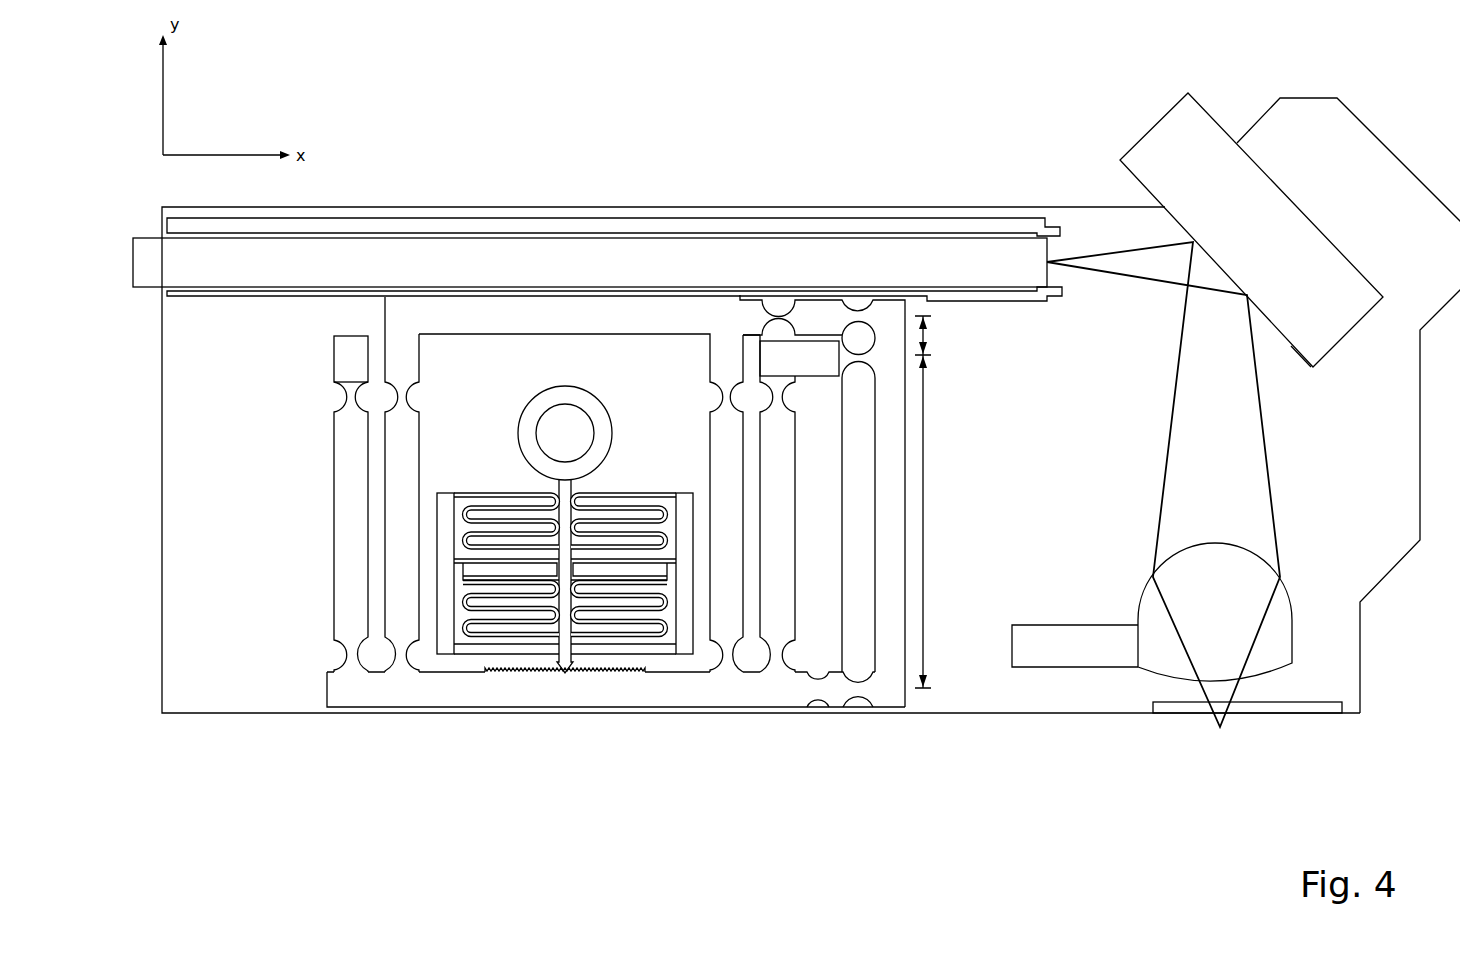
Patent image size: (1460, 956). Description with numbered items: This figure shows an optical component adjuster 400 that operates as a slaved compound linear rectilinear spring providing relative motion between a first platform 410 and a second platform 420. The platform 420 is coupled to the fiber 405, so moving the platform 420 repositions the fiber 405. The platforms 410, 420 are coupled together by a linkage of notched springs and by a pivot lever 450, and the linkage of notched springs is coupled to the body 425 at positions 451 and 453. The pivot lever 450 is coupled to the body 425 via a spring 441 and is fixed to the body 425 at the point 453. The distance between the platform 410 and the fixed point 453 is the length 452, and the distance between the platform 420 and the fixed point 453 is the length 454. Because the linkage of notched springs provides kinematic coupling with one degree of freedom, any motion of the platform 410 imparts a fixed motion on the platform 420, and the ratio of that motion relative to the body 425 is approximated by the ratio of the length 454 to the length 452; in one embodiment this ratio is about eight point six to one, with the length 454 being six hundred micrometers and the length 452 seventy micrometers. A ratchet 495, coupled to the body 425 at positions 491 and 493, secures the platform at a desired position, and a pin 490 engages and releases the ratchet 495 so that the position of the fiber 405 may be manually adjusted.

The adjuster 400 is at (884, 168).
The fiber 405 is at (613, 276).
The platform 410 is at (707, 697).
The platform 420 is at (493, 334).
The body 425 is at (232, 695).
The spring 441 is at (857, 380).
The pivot lever 450 is at (870, 548).
The position 451 is at (352, 348).
The length 452 is at (930, 336).
The position 453 is at (840, 378).
The length 454 is at (930, 508).
The pin 490 is at (618, 402).
The position 491 is at (447, 493).
The position 493 is at (687, 493).
The ratchet 495 is at (581, 667).